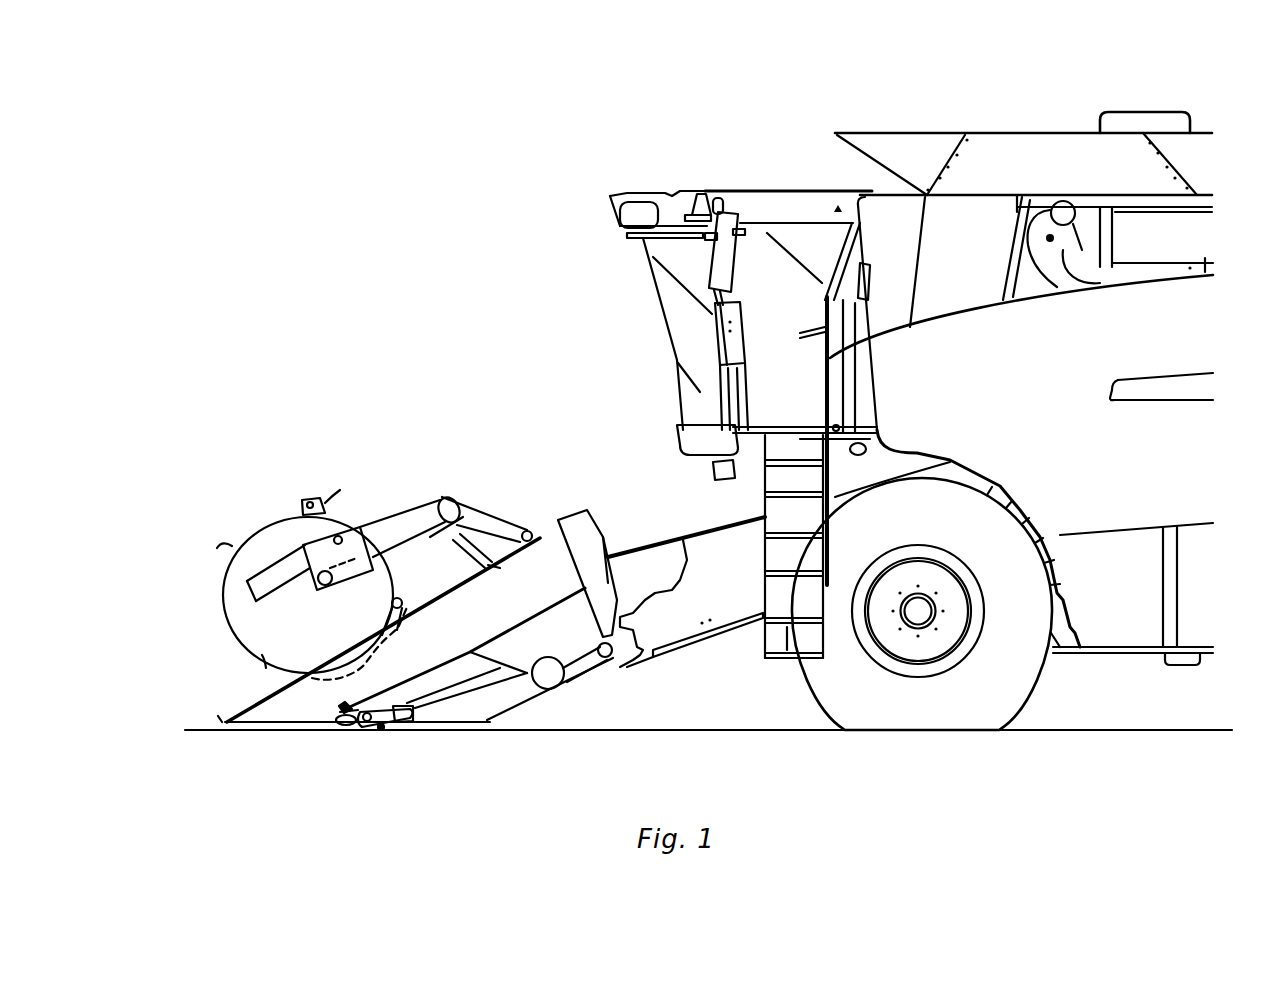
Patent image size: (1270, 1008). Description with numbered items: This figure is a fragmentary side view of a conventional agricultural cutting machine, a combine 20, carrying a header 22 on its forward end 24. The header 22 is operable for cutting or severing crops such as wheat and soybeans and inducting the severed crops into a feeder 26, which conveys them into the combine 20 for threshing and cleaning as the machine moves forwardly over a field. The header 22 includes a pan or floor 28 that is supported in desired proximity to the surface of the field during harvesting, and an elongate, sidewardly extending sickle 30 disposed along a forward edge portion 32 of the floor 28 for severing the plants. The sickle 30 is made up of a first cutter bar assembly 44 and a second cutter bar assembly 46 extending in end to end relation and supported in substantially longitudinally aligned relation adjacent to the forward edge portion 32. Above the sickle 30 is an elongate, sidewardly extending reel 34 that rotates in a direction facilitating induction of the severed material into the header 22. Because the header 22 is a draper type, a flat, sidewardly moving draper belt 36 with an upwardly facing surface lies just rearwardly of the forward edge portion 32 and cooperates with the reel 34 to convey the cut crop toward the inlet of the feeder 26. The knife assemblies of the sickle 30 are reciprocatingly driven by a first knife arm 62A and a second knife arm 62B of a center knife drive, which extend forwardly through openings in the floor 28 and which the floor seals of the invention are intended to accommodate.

The combine 20 is at (1050, 106).
The header 22 is at (478, 510).
The forward end 24 is at (571, 512).
The feeder 26 is at (644, 550).
The floor 28 is at (432, 722).
The sickle 30 is at (333, 728).
The forward edge portion 32 is at (372, 711).
The reel 34 is at (322, 506).
The draper belt 36 is at (473, 729).
The first cutter bar assembly 44 is at (381, 772).
The second cutter bar assembly 46 is at (402, 770).
The first knife arm 62A is at (343, 707).
The second knife arm 62B is at (259, 691).